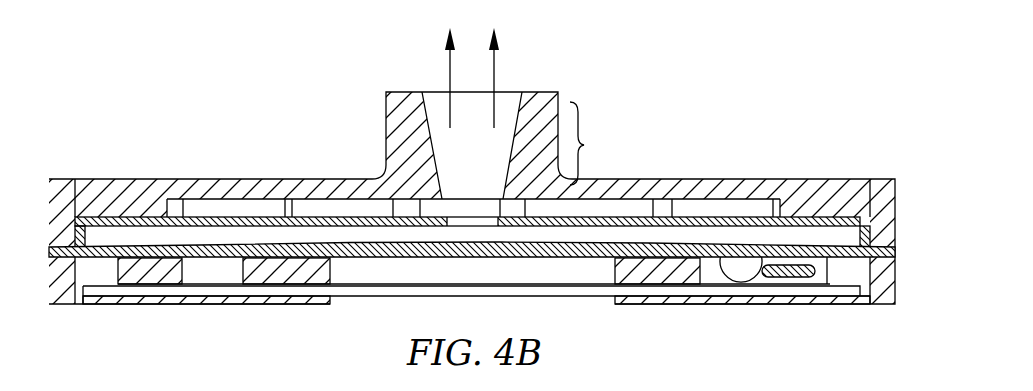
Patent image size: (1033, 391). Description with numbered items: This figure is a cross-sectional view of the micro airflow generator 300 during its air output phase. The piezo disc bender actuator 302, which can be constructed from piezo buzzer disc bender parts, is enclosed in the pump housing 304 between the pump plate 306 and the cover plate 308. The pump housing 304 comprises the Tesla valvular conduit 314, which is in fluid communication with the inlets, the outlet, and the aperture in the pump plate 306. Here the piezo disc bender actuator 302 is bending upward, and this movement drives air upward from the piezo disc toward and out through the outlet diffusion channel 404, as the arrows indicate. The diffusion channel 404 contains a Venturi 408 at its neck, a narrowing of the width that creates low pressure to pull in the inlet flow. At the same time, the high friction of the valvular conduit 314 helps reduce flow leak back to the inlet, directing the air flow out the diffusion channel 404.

The micro airflow generator 300 is at (172, 55).
The piezo disc bender actuator 302 is at (520, 254).
The pump housing 304 is at (873, 188).
The pump plate 306 is at (868, 224).
The cover plate 308 is at (691, 303).
The Tesla valvular conduit 314 is at (610, 206).
The diffusion channel 404 is at (432, 107).
The Venturi 408 is at (597, 143).